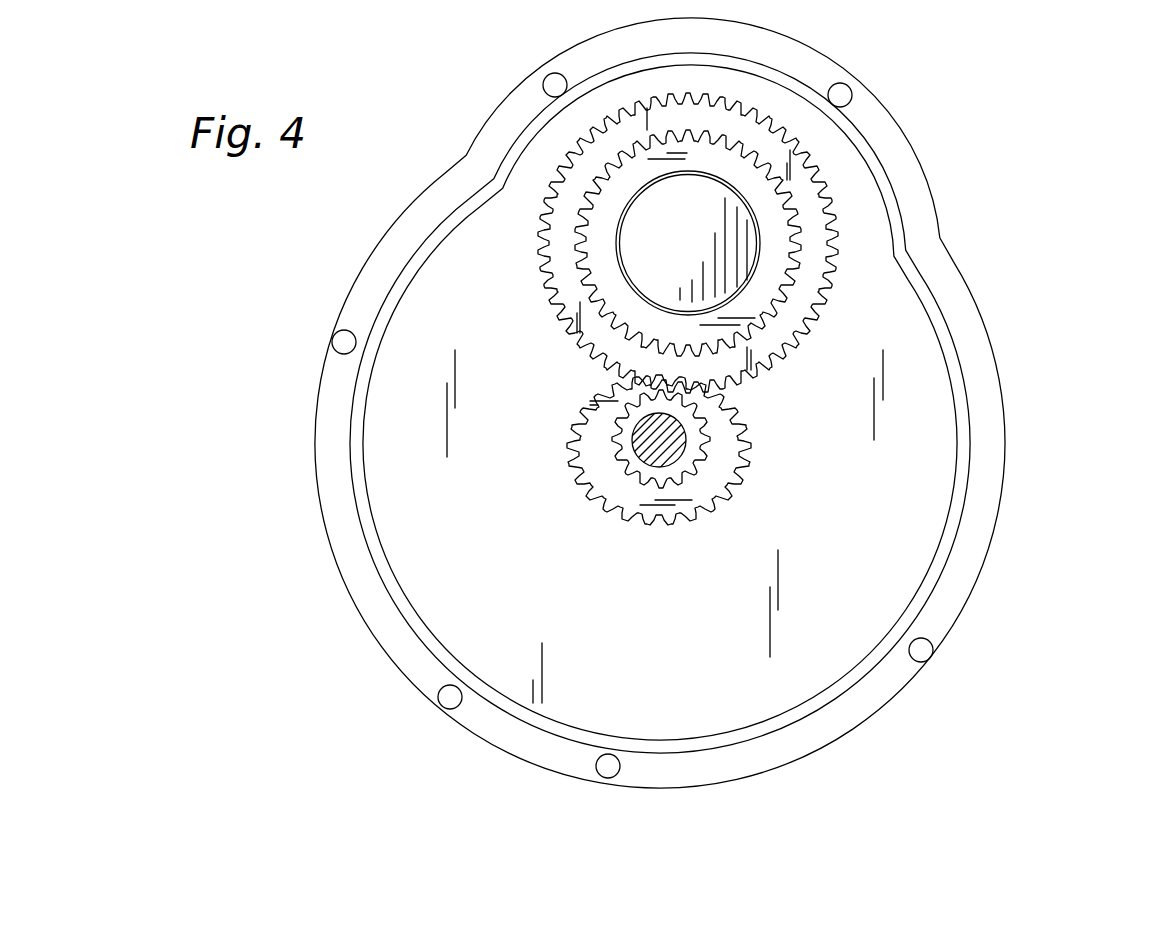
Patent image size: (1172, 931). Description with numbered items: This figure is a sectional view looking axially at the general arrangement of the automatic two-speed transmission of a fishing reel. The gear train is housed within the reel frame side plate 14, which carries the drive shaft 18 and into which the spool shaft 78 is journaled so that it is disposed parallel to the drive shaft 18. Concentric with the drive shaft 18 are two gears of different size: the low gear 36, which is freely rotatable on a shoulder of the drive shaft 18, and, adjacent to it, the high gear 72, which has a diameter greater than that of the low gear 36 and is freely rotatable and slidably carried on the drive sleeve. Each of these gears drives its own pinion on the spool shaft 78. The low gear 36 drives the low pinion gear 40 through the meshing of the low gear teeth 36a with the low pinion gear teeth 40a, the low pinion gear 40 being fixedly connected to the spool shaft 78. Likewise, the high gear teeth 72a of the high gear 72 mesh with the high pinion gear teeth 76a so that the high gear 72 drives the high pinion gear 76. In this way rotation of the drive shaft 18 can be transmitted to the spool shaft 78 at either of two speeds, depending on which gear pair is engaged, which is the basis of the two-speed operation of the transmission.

The reel frame side plate 14 is at (1005, 495).
The drive shaft 18 is at (692, 207).
The low gear 36 is at (838, 257).
The low gear teeth 36a is at (790, 297).
The low pinion gear 40 is at (660, 507).
The low pinion gear teeth 40a is at (627, 523).
The high gear 72 is at (765, 234).
The high gear teeth 72a is at (817, 170).
The high pinion gear 76 is at (633, 462).
The high pinion gear teeth 76a is at (620, 423).
The spool shaft 78 is at (673, 463).